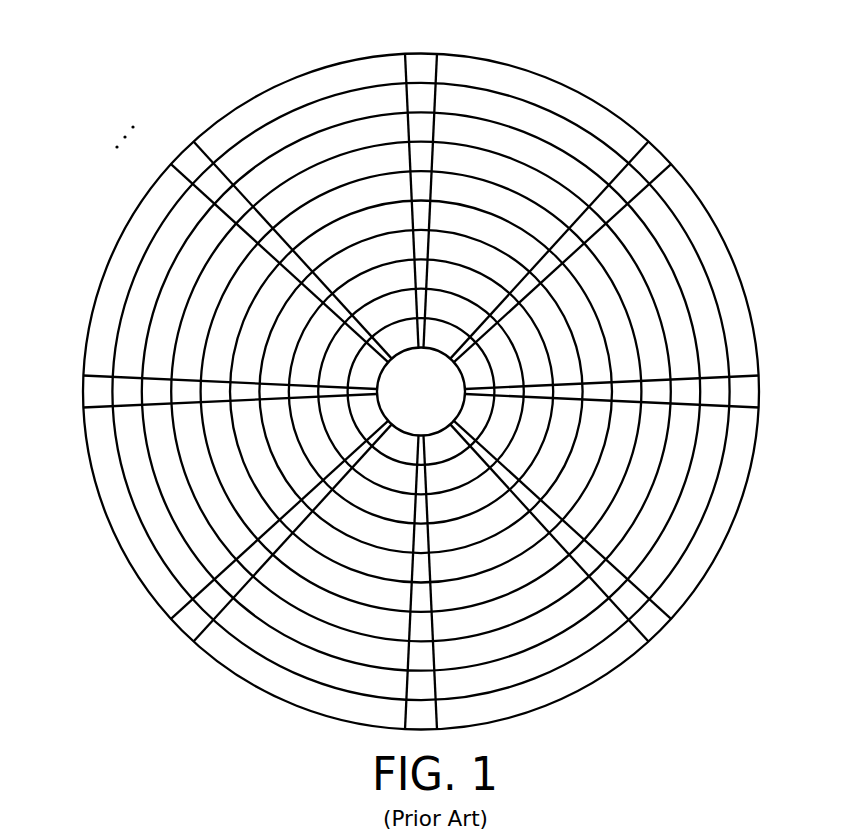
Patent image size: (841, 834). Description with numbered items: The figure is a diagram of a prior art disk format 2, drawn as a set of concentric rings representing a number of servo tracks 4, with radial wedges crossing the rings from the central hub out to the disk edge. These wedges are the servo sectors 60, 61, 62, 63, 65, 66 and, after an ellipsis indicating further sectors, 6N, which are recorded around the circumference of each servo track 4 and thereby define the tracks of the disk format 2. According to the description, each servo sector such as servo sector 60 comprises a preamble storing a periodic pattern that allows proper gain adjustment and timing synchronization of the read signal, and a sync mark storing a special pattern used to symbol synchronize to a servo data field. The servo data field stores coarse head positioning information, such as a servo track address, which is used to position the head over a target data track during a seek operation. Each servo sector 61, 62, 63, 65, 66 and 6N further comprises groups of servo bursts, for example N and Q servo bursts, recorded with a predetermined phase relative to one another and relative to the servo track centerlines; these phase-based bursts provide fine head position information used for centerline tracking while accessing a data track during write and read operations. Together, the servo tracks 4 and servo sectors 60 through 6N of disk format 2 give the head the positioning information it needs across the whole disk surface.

The disk format 2 is at (168, 56).
The servo track 4 is at (535, 122).
The servo sector 60 is at (422, 62).
The servo sector 61 is at (650, 162).
The servo sector 62 is at (750, 393).
The servo sector 63 is at (650, 620).
The servo sector 65 is at (188, 623).
The servo sector 66 is at (92, 390).
The servo sector 6N is at (193, 157).